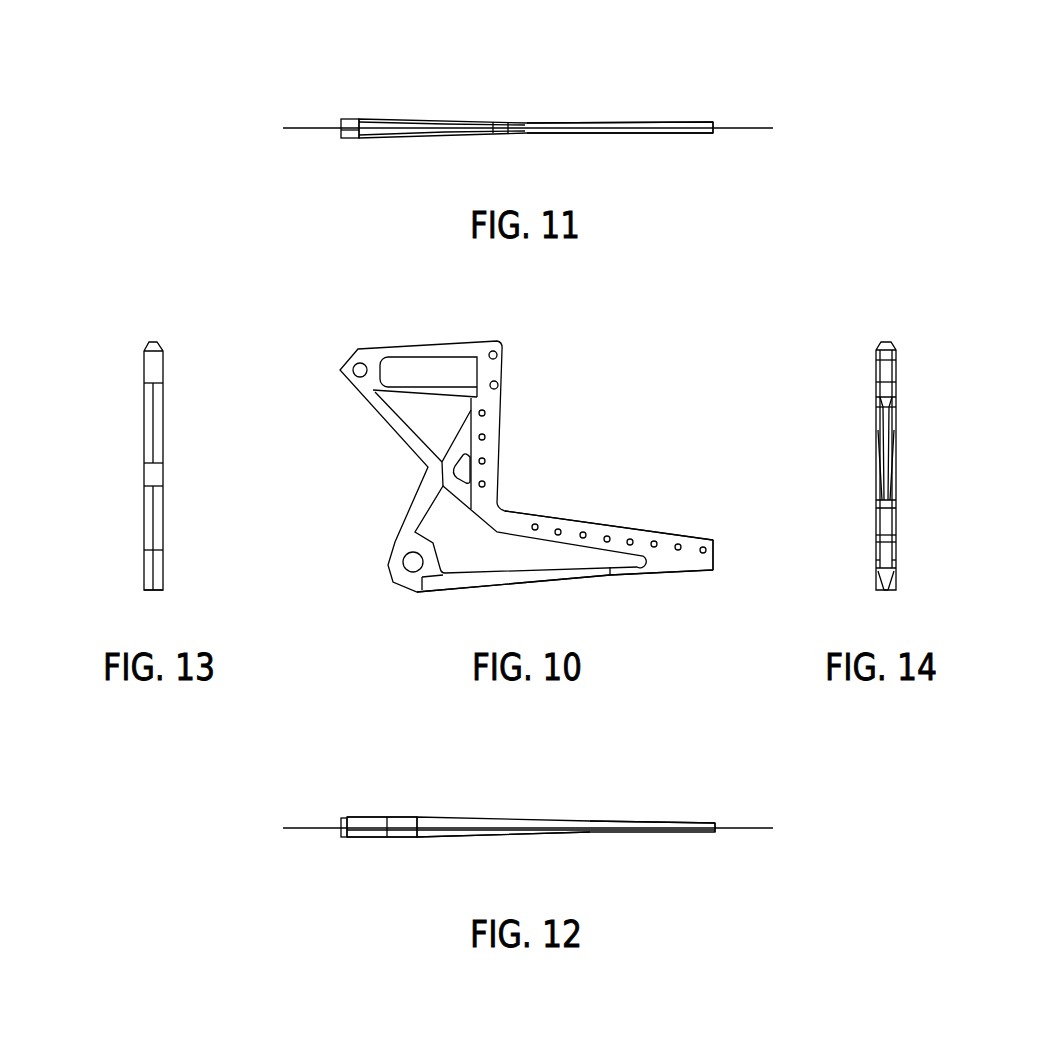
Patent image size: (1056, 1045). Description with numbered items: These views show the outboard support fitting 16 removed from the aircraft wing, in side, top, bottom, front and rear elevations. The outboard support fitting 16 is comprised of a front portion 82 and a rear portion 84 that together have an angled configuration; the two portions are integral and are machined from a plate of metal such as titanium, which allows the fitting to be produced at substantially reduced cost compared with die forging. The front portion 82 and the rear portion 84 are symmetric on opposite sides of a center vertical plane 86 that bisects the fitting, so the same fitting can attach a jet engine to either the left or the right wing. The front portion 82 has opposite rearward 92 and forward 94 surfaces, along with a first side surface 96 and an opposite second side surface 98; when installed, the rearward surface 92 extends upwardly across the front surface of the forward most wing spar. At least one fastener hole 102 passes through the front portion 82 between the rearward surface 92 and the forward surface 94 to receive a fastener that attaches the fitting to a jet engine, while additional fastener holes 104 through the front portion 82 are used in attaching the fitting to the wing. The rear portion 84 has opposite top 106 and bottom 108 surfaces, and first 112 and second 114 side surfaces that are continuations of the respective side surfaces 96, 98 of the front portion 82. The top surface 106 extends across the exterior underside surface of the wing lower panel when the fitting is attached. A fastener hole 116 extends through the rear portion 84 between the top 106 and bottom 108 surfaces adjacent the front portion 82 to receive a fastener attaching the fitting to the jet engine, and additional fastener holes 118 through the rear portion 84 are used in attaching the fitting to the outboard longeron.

In FIG. 11, the outboard support fitting 16 is at (473, 92).
In FIG. 10, the outboard support fitting 16 is at (540, 478).
In FIG. 13, the outboard support fitting 16 is at (130, 475).
In FIG. 14, the outboard support fitting 16 is at (913, 460).
In FIG. 12, the outboard support fitting 16 is at (610, 847).
In FIG. 11, the front portion 82 is at (358, 110).
In FIG. 10, the front portion 82 is at (395, 469).
In FIG. 13, the front portion 82 is at (143, 513).
In FIG. 14, the front portion 82 is at (897, 385).
In FIG. 12, the front portion 82 is at (367, 838).
In FIG. 11, the rear portion 84 is at (612, 134).
In FIG. 10, the rear portion 84 is at (623, 524).
In FIG. 14, the rear portion 84 is at (897, 533).
In FIG. 12, the rear portion 84 is at (592, 820).
In FIG. 11, the center vertical plane 86 is at (733, 127).
In FIG. 12, the center vertical plane 86 is at (733, 828).
In FIG. 11, the rearward surface 92 is at (508, 128).
In FIG. 10, the rearward surface 92 is at (498, 444).
In FIG. 14, the rearward surface 92 is at (885, 417).
In FIG. 11, the forward surface 94 is at (340, 133).
In FIG. 10, the forward surface 94 is at (375, 408).
In FIG. 13, the forward surface 94 is at (150, 428).
In FIG. 12, the forward surface 94 is at (341, 832).
In FIG. 11, the first side surface 96 is at (372, 120).
In FIG. 10, the first side surface 96 is at (425, 377).
In FIG. 13, the first side surface 96 is at (144, 440).
In FIG. 14, the first side surface 96 is at (895, 395).
In FIG. 12, the first side surface 96 is at (373, 818).
In FIG. 11, the second side surface 98 is at (373, 138).
In FIG. 10, the second side surface 98 is at (447, 510).
In FIG. 13, the second side surface 98 is at (163, 418).
In FIG. 14, the second side surface 98 is at (882, 382).
In FIG. 12, the second side surface 98 is at (373, 838).
In FIG. 10, the fastener hole 102 is at (354, 364).
In FIG. 10, the additional fastener holes 104 is at (502, 342).
In FIG. 11, the top surface 106 is at (636, 130).
In FIG. 10, the top surface 106 is at (653, 533).
In FIG. 13, the top surface 106 is at (157, 515).
In FIG. 14, the top surface 106 is at (885, 552).
In FIG. 10, the bottom surface 108 is at (637, 577).
In FIG. 13, the bottom surface 108 is at (153, 590).
In FIG. 14, the bottom surface 108 is at (887, 590).
In FIG. 12, the bottom surface 108 is at (503, 830).
In FIG. 11, the first side surface 112 is at (668, 121).
In FIG. 13, the first side surface 112 is at (163, 563).
In FIG. 14, the first side surface 112 is at (895, 560).
In FIG. 12, the first side surface 112 is at (668, 823).
In FIG. 11, the second side surface 114 is at (668, 132).
In FIG. 10, the second side surface 114 is at (460, 553).
In FIG. 13, the second side surface 114 is at (144, 560).
In FIG. 14, the second side surface 114 is at (876, 562).
In FIG. 12, the second side surface 114 is at (668, 832).
In FIG. 10, the fastener hole 116 is at (407, 566).
In FIG. 10, the additional fastener holes 118 is at (718, 546).